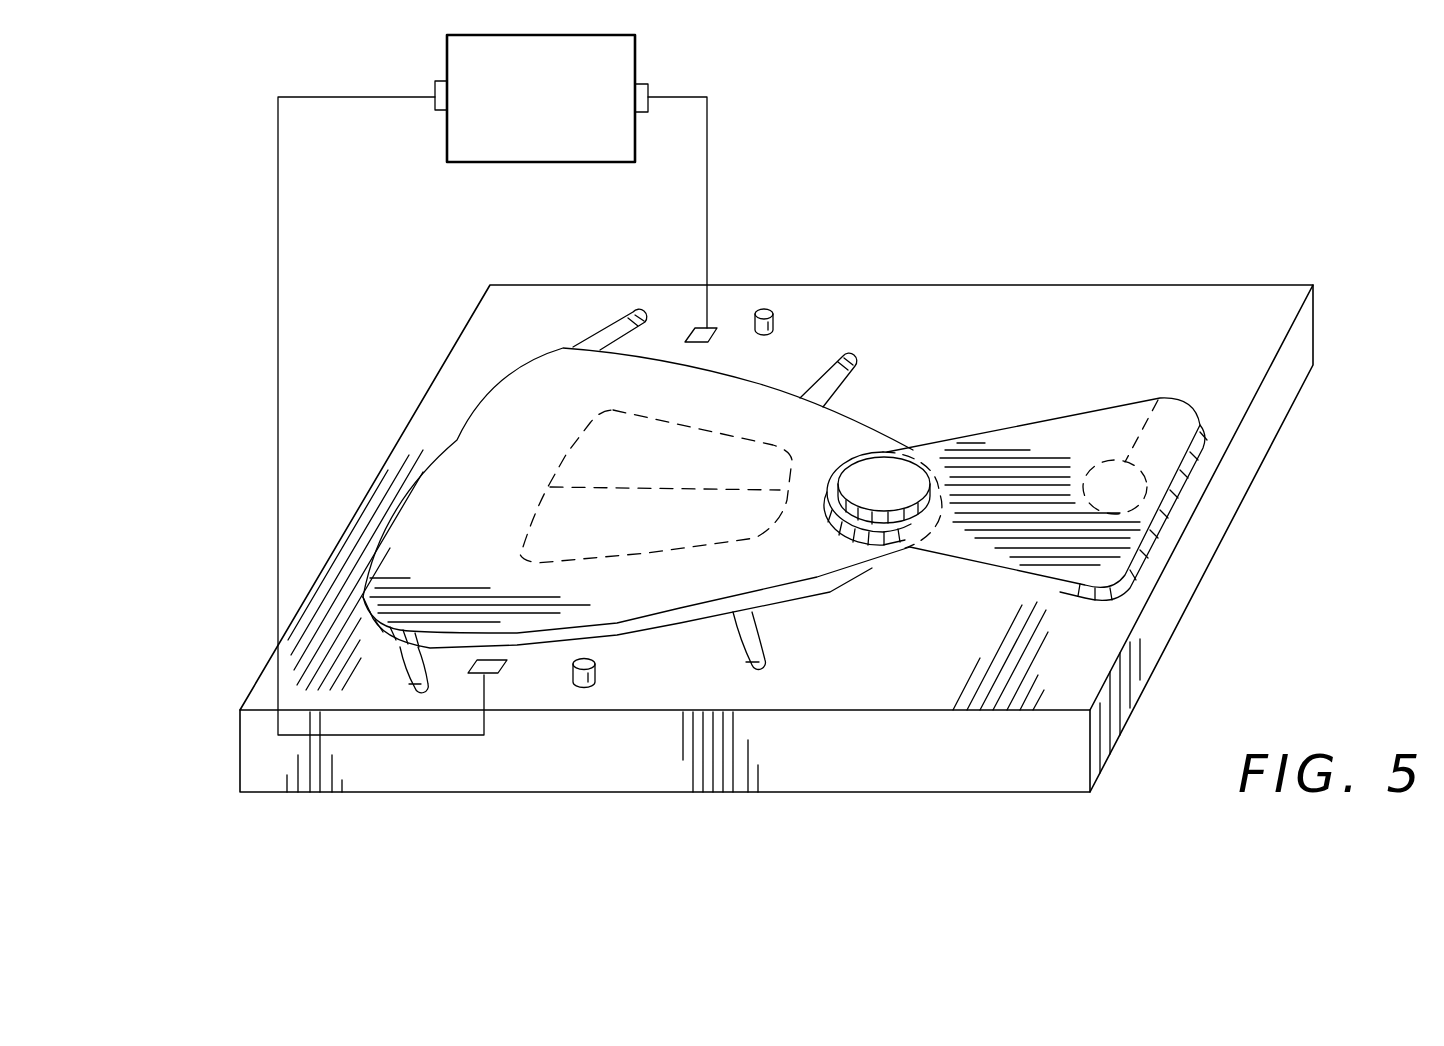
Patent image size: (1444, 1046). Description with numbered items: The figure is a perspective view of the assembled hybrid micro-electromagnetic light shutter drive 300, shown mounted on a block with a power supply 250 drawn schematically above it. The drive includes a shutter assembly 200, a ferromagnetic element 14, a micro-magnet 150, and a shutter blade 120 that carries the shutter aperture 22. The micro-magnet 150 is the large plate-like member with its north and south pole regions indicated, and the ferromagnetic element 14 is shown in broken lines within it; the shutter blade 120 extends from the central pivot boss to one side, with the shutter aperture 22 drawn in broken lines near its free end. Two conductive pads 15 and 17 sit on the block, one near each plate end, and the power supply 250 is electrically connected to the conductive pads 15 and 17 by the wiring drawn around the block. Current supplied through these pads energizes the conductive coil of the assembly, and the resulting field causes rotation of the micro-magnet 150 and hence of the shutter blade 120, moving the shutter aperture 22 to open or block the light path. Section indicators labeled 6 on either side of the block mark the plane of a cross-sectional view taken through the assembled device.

The micro-electromagnetic light shutter drive 300 is at (186, 112).
The power supply 250 is at (637, 62).
The shutter assembly 200 is at (453, 443).
The micro-magnet 150 is at (530, 397).
The shutter blade 120 is at (1035, 416).
The ferromagnetic element 14 is at (733, 518).
The conductive pad 15 is at (708, 340).
The conductive pad 17 is at (508, 673).
The shutter aperture 22 is at (1158, 400).
The section line 6 is at (225, 487).